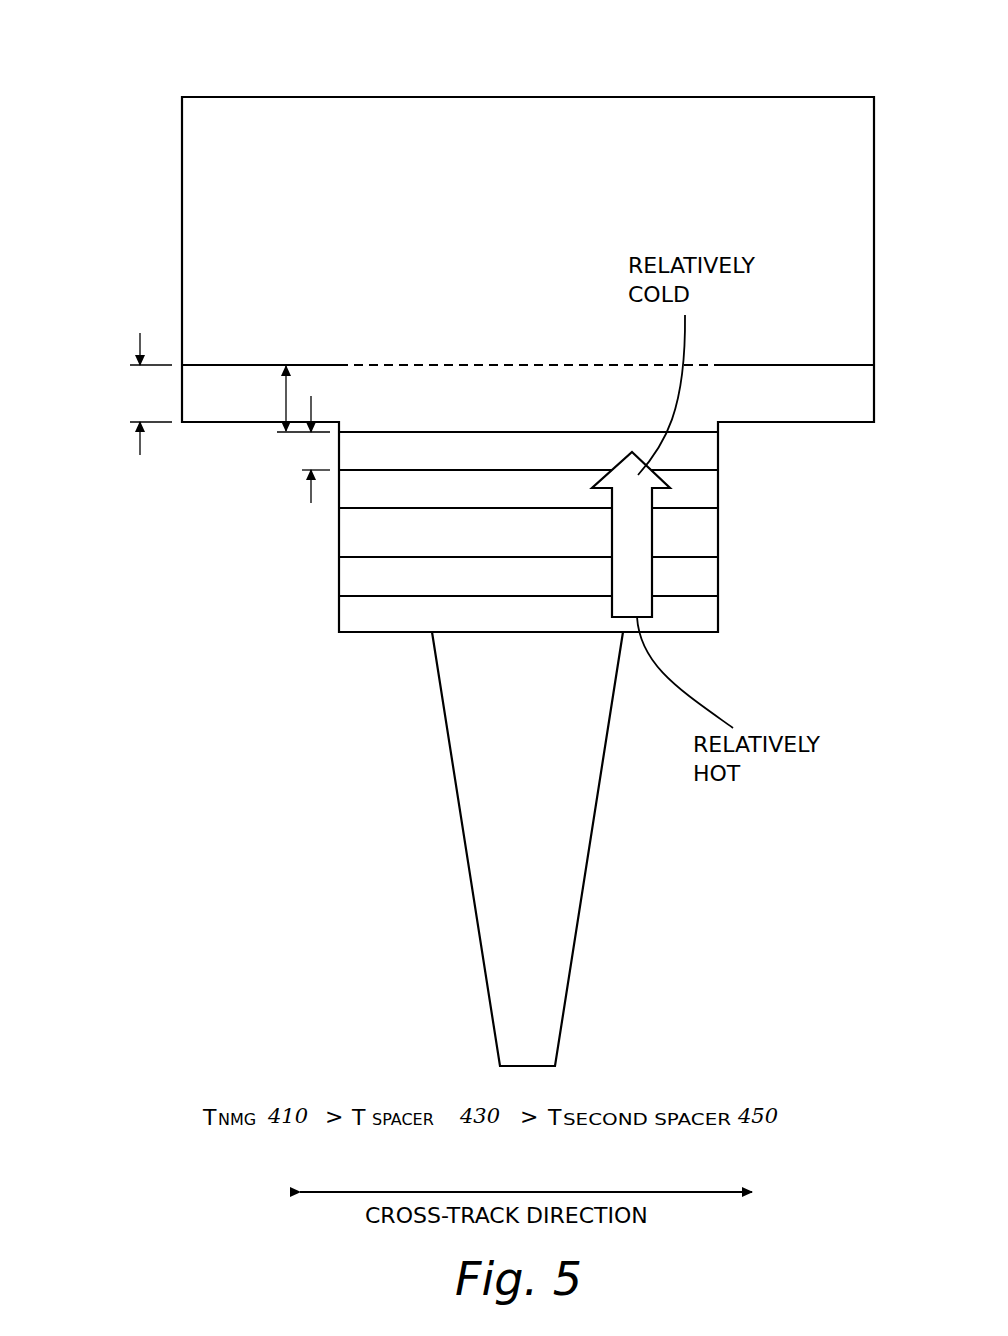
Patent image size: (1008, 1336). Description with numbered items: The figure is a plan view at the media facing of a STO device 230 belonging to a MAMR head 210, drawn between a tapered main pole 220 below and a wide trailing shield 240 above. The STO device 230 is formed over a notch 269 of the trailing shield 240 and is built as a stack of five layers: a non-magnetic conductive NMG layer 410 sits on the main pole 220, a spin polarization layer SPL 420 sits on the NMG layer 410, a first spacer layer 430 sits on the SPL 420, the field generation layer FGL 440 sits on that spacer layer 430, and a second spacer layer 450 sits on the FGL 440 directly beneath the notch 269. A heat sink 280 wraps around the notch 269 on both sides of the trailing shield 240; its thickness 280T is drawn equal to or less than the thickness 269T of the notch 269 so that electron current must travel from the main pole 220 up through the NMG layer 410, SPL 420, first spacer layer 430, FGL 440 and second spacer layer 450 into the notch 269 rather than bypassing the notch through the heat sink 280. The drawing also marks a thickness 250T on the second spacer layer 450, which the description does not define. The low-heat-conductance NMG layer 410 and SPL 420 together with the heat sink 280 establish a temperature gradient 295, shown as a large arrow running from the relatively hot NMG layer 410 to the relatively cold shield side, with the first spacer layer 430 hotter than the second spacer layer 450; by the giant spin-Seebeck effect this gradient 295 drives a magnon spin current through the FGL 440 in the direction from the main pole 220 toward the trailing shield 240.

The MAMR head 210 is at (276, 38).
The main pole 220 is at (546, 852).
The STO device 230 is at (173, 594).
The trailing shield 240 is at (546, 172).
The notch 269 is at (713, 392).
The thickness of the notch 269T is at (284, 398).
The heat sink 280 is at (849, 402).
The thickness of the heat sink 280T is at (138, 392).
The second spacer thickness 250T is at (310, 455).
The temperature gradient 295 is at (620, 582).
The non-magnetic conductive (NMG) layer 410 is at (712, 621).
The spin polarization layer (SPL) 420 is at (712, 582).
The first spacer layer 430 is at (712, 540).
The field generation layer (FGL) 440 is at (712, 491).
The second spacer layer 450 is at (712, 452).